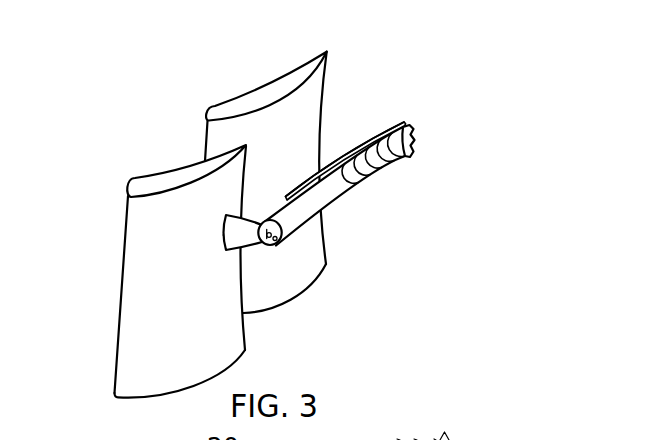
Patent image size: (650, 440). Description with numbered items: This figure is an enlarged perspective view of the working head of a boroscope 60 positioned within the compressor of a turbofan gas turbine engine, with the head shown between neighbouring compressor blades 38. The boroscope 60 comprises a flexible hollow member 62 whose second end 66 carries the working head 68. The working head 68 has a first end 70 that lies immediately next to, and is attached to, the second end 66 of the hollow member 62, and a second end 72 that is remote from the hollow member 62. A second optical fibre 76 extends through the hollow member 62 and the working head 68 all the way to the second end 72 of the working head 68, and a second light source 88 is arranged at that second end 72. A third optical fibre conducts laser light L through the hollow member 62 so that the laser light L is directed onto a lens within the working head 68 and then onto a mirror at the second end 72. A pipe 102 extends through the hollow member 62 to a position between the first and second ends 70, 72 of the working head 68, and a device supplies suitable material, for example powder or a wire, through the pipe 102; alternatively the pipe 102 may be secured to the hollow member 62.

The airfoil blade 38 is at (140, 243).
The laser light L is at (223, 235).
The boroscope 60 is at (373, 168).
The flexible hollow member 62 is at (410, 156).
The second end of the hollow member 66 is at (352, 173).
The working head 68 is at (322, 193).
The first end of the working head 70 is at (360, 127).
The pipe 102 is at (372, 122).
The second end of the working head 72 is at (282, 247).
The second optical fibre 76 is at (276, 252).
The second light source 88 is at (264, 256).